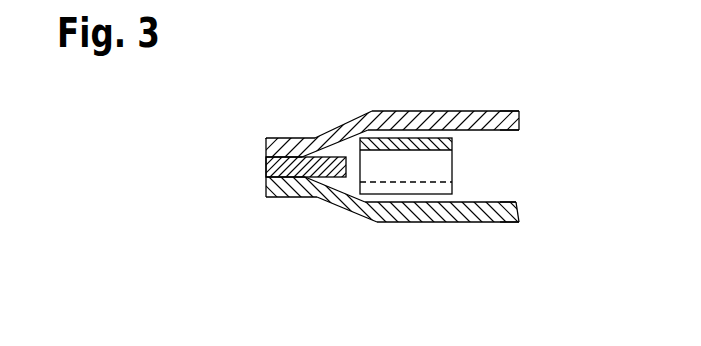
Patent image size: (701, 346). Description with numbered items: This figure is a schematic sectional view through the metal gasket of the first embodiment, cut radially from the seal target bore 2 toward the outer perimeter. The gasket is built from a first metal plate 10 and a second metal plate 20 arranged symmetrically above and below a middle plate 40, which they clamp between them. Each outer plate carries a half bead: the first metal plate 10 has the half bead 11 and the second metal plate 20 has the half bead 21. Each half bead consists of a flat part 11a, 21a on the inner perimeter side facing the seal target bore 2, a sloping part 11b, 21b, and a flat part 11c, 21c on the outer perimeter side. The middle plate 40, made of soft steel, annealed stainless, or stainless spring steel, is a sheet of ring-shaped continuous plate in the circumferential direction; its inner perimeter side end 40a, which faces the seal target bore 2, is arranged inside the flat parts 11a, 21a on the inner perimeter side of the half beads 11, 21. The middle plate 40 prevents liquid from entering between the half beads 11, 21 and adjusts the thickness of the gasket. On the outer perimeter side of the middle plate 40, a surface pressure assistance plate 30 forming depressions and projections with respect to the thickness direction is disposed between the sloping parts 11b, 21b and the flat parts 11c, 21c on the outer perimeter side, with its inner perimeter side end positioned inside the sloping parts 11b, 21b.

The seal target bore 2 is at (222, 186).
The first metal plate 10 is at (519, 120).
The half bead 11 is at (400, 103).
The flat part on the inner perimeter side 11a is at (287, 137).
The sloping part 11b is at (350, 127).
The flat part on the outer perimeter side 11c is at (400, 111).
The second metal plate 20 is at (519, 212).
The half bead 21 is at (394, 231).
The flat part on the inner perimeter side 21a is at (285, 198).
The sloping part 21b is at (346, 211).
The flat part on the outer perimeter side 21c is at (400, 223).
The surface pressure assistance plate 30 is at (452, 170).
The middle plate 40 is at (254, 175).
The inner perimeter side end 40a is at (266, 172).